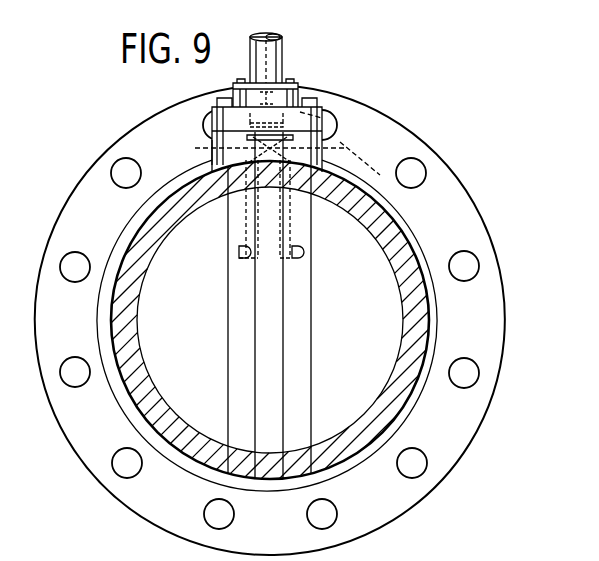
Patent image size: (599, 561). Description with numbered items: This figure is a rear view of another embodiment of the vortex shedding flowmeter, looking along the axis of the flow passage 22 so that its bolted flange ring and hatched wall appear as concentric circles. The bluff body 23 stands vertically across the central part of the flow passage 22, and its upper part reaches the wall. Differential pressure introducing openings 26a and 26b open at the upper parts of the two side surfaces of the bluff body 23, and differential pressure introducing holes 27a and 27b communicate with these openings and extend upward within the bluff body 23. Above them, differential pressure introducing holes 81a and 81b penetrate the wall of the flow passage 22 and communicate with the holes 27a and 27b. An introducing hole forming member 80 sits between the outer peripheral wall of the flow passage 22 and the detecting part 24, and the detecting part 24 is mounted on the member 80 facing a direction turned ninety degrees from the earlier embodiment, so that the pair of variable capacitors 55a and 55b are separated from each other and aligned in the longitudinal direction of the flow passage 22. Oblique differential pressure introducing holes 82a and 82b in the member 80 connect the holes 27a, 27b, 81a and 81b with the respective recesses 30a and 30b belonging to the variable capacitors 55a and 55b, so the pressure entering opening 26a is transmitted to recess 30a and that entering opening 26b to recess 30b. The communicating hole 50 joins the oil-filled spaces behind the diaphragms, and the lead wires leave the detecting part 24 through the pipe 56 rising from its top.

The flow passage 22 is at (399, 288).
The bluff body 23 is at (303, 325).
The detecting part 24 is at (316, 101).
The pipe 56 is at (283, 62).
The introducing hole forming member 80 is at (212, 140).
The communicating hole 50 is at (305, 118).
The variable capacitor 55a is at (380, 112).
The variable capacitor 55b is at (291, 128).
The recess 30a is at (344, 148).
The recess 30b is at (307, 135).
The oblique differential pressure introducing hole 82a is at (380, 175).
The oblique differential pressure introducing hole 82b is at (243, 149).
The differential pressure introducing hole 81a is at (283, 180).
The differential pressure introducing hole 81b is at (250, 178).
The differential pressure introducing hole 27a is at (300, 247).
The differential pressure introducing hole 27b is at (238, 240).
The differential pressure introducing opening 26a is at (299, 256).
The differential pressure introducing opening 26b is at (239, 260).